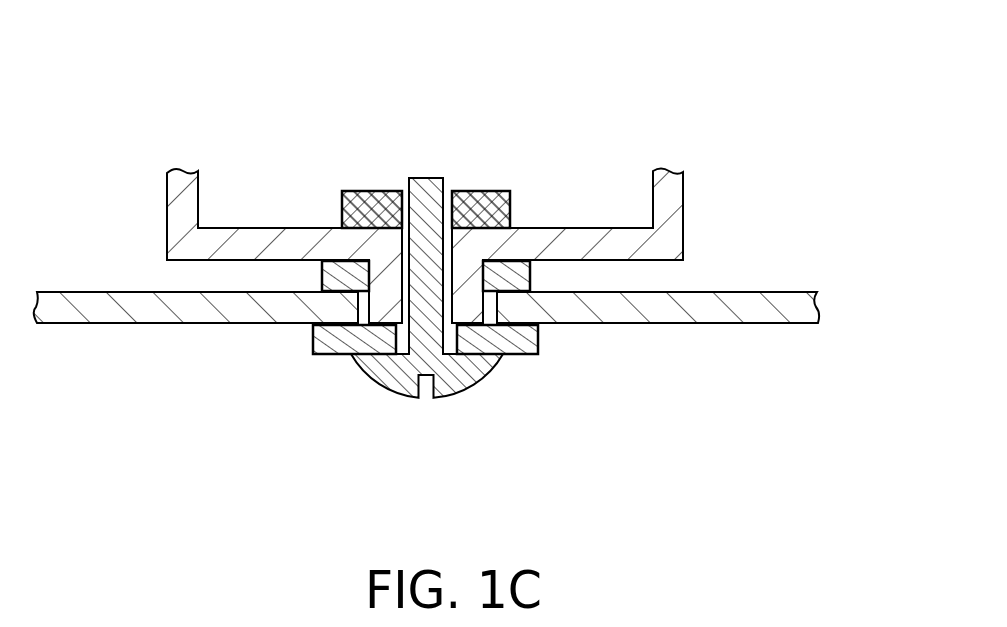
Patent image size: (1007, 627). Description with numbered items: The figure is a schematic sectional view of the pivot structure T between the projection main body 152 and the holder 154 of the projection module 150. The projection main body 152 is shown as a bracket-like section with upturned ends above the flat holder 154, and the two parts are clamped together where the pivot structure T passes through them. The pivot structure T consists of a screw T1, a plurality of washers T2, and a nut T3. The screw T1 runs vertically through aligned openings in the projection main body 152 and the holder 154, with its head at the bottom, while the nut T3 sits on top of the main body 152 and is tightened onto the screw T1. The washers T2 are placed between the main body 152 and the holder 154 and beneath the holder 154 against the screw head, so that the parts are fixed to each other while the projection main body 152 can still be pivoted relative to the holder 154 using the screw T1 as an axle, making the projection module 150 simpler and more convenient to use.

The projection module 150 is at (893, 490).
The projection main body 152 is at (683, 205).
The holder 154 is at (818, 309).
The pivot structure T is at (649, 125).
The screw T1 is at (462, 377).
The washers T2 is at (530, 274).
The nut T3 is at (483, 205).